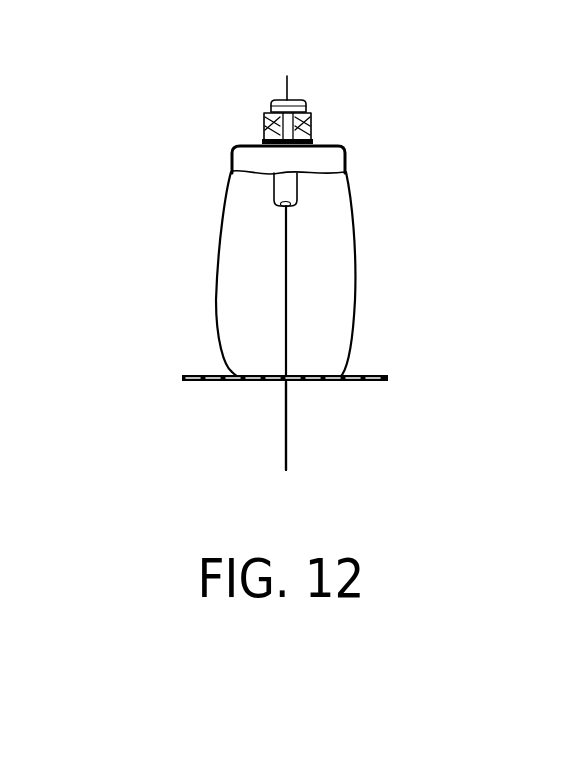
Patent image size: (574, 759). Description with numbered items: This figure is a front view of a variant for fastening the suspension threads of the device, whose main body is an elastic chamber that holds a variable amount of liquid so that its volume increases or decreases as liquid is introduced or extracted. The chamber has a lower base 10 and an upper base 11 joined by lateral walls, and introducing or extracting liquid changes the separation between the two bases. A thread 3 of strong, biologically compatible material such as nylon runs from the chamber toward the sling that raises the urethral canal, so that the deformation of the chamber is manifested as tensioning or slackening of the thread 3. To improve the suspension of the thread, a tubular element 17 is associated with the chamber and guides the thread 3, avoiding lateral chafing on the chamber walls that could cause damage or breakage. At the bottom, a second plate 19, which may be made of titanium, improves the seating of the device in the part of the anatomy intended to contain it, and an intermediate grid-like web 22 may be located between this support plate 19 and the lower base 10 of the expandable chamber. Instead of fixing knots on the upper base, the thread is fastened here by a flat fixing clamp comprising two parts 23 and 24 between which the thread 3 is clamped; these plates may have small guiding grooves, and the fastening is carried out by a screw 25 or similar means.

The nylon thread 3 is at (284, 328).
The lower base 10 is at (266, 375).
The upper base 11 is at (252, 146).
The tubular element 17 is at (287, 187).
The second plate 19 is at (243, 382).
The grid-like web 22 is at (203, 375).
The clamp part 23 is at (317, 120).
The clamp part 24 is at (312, 126).
The screw 25 is at (292, 100).